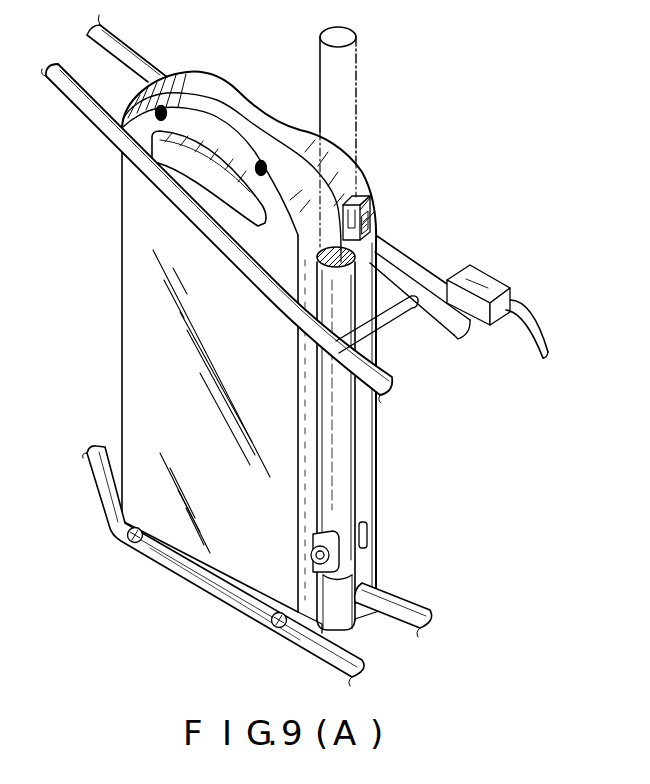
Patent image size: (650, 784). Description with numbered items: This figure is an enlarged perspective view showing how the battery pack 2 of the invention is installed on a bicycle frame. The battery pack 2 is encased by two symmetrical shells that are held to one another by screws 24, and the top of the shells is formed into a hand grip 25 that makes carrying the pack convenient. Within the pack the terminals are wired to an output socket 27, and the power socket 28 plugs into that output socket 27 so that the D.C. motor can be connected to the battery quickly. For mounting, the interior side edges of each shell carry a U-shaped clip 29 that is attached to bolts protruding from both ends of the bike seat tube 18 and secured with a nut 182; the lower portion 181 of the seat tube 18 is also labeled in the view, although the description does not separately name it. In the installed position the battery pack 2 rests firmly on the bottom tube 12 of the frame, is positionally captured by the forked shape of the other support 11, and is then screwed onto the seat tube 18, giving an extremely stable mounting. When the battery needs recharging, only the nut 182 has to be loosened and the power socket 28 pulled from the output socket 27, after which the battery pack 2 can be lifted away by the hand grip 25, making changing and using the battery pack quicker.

The battery pack 2 is at (204, 314).
The support 11 is at (170, 196).
The bottom tube 12 is at (185, 573).
The seat tube 18 is at (341, 448).
The screws 24 is at (160, 107).
The hand grip 25 is at (260, 111).
The output socket 27 is at (372, 207).
The power socket 28 is at (486, 292).
The U-shaped clip 29 is at (322, 532).
The collar 181 is at (338, 577).
The nut 182 is at (340, 545).